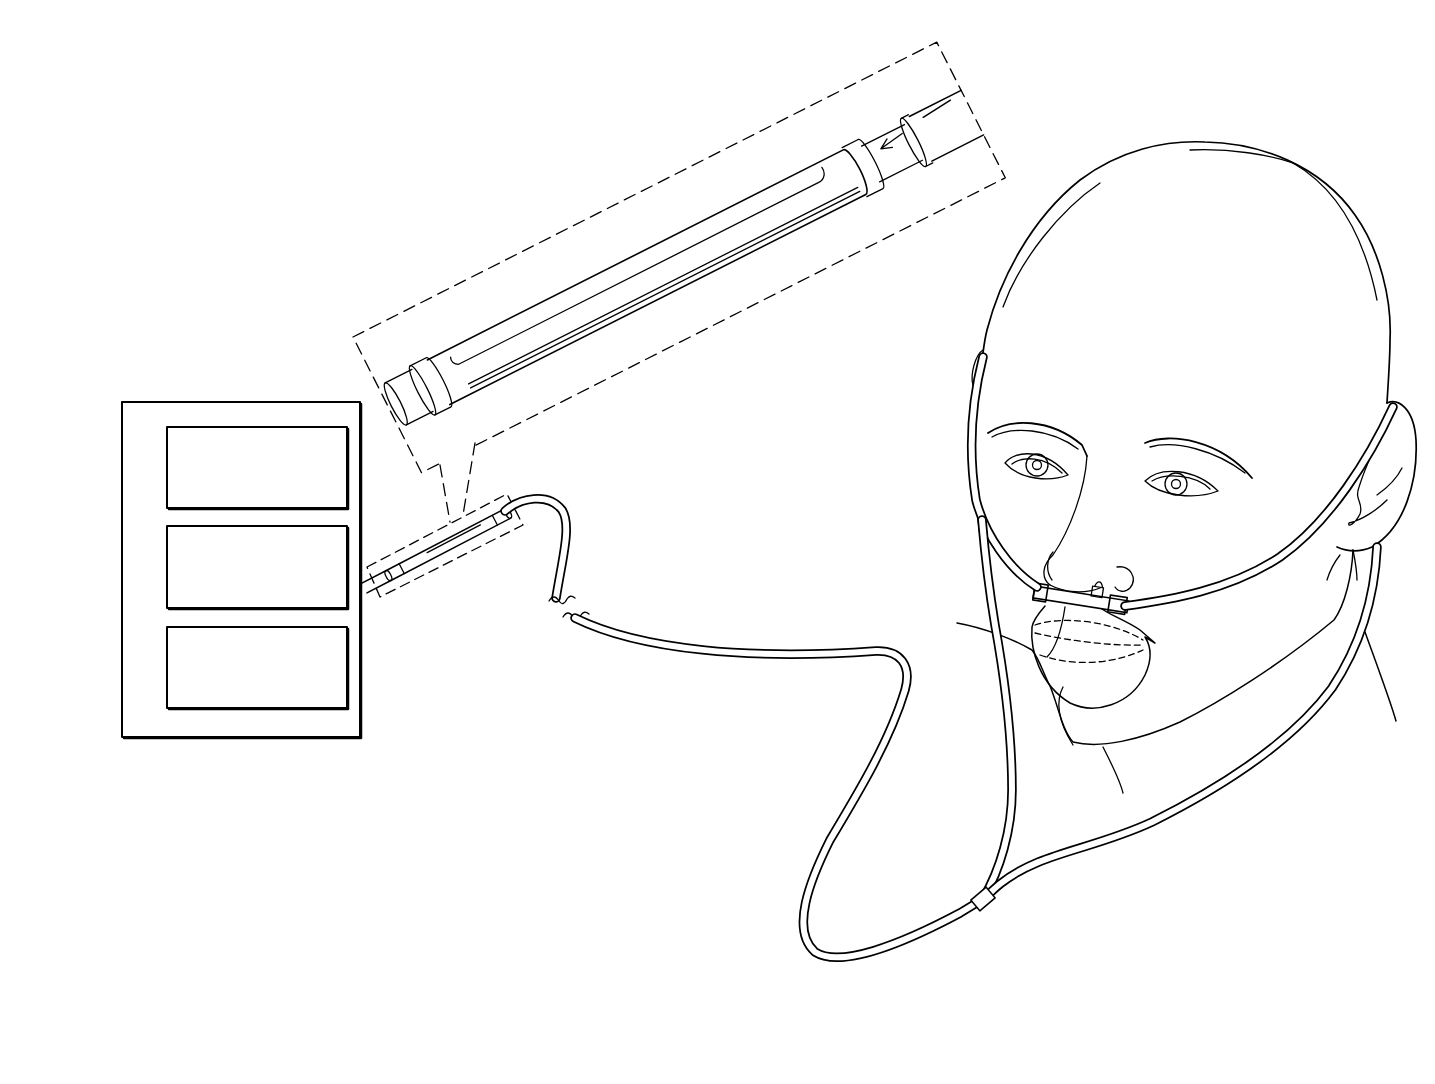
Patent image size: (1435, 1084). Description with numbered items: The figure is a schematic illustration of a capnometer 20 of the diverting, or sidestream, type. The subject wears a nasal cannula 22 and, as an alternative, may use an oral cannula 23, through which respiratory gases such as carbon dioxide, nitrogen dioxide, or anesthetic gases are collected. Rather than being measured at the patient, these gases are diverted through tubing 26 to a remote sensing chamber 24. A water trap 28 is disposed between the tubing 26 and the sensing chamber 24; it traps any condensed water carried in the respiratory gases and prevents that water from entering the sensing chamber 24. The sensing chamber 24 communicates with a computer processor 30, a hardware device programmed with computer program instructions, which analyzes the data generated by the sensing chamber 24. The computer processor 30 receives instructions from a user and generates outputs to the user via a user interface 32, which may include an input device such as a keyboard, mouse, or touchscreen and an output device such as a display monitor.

The capnometer 20 is at (272, 259).
The nasal cannula 22 is at (1040, 640).
The oral cannula 23 is at (1062, 693).
The remote sensing chamber 24 is at (168, 480).
The tubing 26 is at (948, 138).
The water trap 28 is at (525, 312).
The computer processor 30 is at (168, 570).
The user interface 32 is at (168, 671).